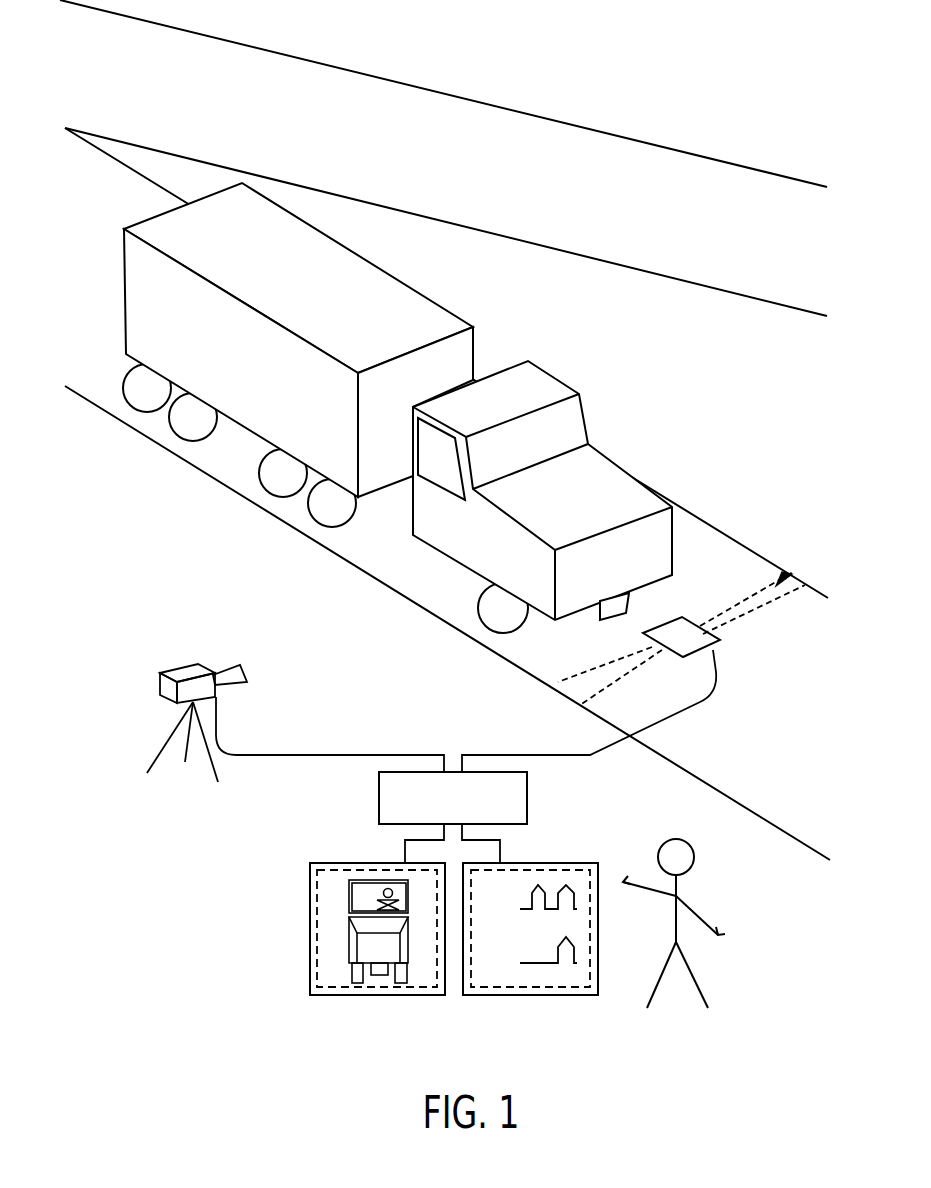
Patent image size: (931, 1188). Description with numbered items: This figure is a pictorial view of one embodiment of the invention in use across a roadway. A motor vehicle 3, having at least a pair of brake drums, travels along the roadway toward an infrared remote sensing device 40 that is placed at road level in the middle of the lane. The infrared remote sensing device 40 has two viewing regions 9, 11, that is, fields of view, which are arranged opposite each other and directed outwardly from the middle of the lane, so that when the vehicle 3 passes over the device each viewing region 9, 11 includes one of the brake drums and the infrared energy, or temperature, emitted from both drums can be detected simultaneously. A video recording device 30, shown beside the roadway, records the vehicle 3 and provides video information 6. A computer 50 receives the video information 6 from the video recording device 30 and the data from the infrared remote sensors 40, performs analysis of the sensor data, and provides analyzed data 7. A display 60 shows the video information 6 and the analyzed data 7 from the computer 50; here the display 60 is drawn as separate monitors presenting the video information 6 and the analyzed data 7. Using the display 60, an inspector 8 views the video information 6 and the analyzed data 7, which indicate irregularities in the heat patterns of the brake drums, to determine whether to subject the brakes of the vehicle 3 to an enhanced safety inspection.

The motor vehicle 3 is at (123, 275).
The video recording device 30 is at (170, 665).
The infrared remote sensors 40 is at (718, 652).
The viewing region 11 is at (800, 567).
The viewing region 9 is at (565, 695).
The computer 50 is at (377, 806).
The display 60 is at (424, 1003).
The video information 6 is at (333, 996).
The analyzed data 7 is at (567, 996).
The inspector 8 is at (727, 948).